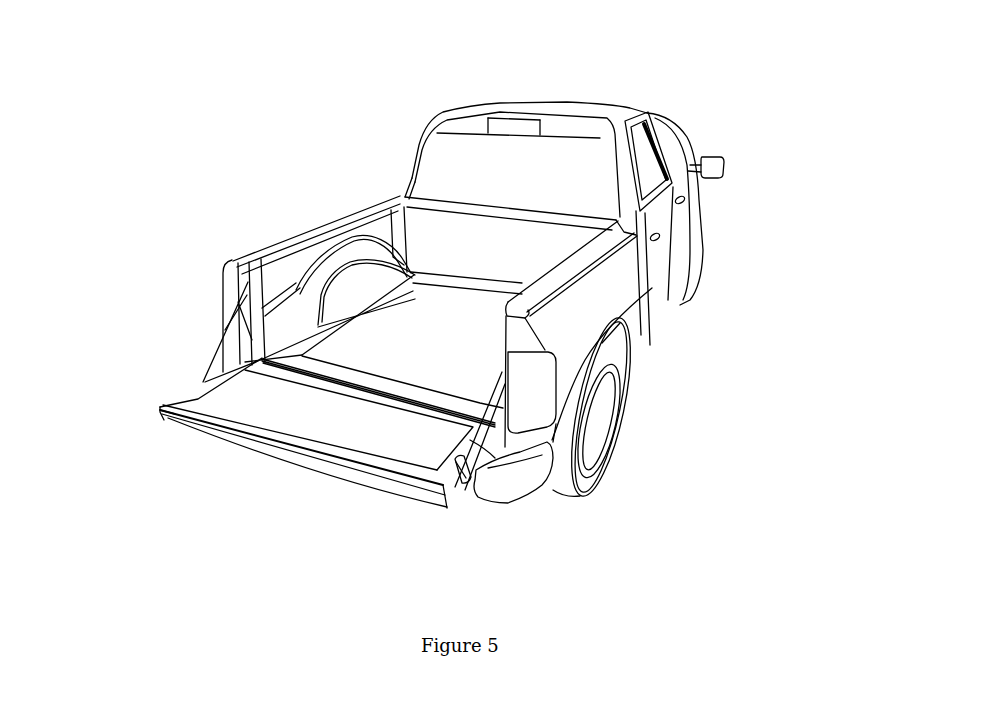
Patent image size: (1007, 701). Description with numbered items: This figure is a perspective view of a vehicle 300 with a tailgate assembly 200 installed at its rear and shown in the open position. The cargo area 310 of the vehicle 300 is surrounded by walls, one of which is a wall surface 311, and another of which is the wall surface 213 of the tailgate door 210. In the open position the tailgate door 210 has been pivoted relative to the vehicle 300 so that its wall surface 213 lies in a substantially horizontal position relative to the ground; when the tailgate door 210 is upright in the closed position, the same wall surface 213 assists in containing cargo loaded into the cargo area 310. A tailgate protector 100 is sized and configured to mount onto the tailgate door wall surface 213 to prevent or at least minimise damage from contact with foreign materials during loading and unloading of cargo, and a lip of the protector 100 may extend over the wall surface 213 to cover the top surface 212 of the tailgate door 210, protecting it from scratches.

The vehicle 300 is at (703, 82).
The cargo area 310 is at (447, 322).
The wall surface 311 is at (498, 257).
The tailgate assembly 200 is at (184, 357).
The tailgate protector 100 is at (320, 416).
The tailgate door wall surface 213 is at (190, 407).
The top surface 212 is at (355, 480).
The tailgate door 210 is at (455, 490).